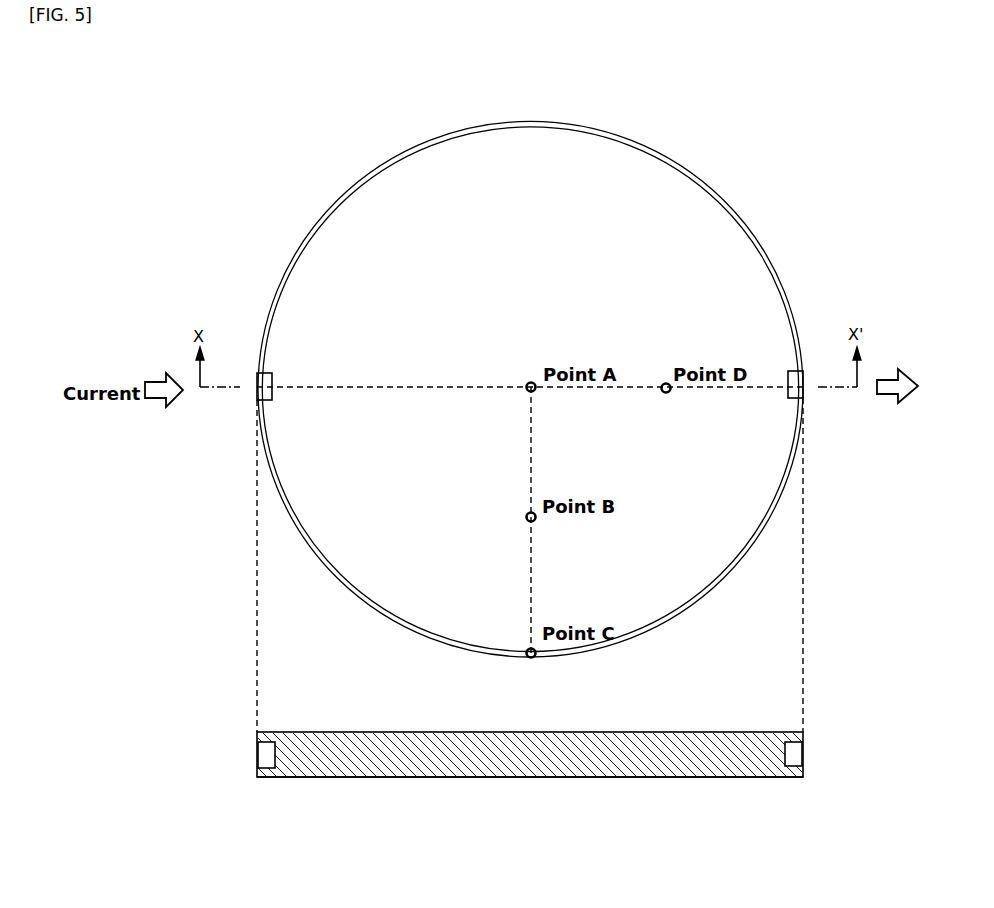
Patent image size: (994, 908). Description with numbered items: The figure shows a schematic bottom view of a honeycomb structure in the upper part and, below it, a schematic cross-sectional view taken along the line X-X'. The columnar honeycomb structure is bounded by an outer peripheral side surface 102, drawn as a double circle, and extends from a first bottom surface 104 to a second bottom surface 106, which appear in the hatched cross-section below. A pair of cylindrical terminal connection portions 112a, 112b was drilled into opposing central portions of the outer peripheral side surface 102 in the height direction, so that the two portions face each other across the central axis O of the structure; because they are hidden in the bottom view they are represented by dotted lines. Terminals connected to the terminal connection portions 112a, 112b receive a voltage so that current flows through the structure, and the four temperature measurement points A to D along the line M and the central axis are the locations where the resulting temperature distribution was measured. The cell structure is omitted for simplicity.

The outer peripheral side surface 102 is at (355, 602).
The first bottom surface 104 is at (603, 732).
The second bottom surface 106 is at (535, 777).
The terminal connection portion 112a is at (257, 395).
The terminal connection portion 112b is at (803, 388).
The measurement line M is at (313, 386).
The central axis O is at (533, 383).